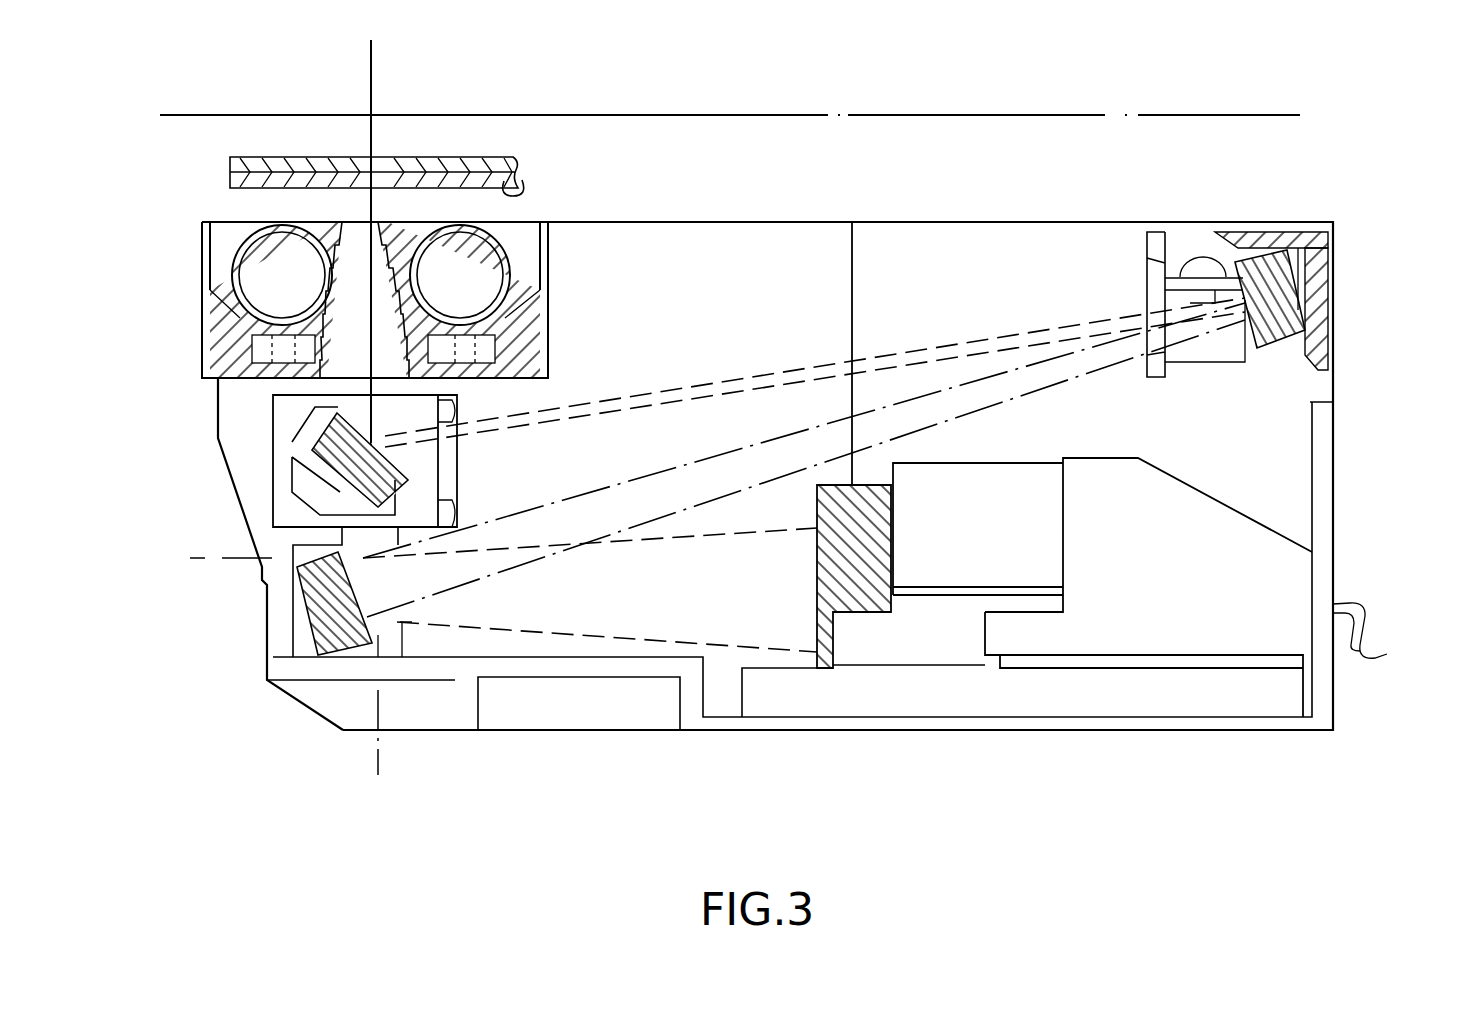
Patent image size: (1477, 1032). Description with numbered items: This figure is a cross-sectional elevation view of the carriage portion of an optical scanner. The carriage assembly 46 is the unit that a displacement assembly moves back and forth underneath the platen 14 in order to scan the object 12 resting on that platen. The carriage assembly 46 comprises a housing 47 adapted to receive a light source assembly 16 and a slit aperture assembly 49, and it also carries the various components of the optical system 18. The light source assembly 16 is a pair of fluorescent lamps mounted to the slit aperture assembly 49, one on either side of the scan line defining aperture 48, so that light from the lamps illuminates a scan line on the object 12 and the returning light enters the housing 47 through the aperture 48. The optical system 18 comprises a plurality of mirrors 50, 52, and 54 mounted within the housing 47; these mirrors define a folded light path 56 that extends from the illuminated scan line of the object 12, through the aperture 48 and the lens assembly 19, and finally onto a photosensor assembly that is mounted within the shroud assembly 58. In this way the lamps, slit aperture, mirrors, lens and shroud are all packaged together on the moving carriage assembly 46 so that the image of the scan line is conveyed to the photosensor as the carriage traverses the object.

The object 12 is at (457, 157).
The platen 14 is at (513, 190).
The light source assembly 16 is at (268, 268).
The optical system 18 is at (918, 306).
The lens assembly 19 is at (1040, 460).
The carriage assembly 46 is at (1352, 397).
The housing 47 is at (265, 583).
The scan line defining aperture 48 is at (368, 232).
The slit aperture assembly 49 is at (338, 236).
The mirror 50 is at (403, 464).
The mirror 52 is at (1290, 300).
The mirror 54 is at (495, 572).
The folded light path 56 is at (455, 572).
The shroud assembly 58 is at (1215, 545).